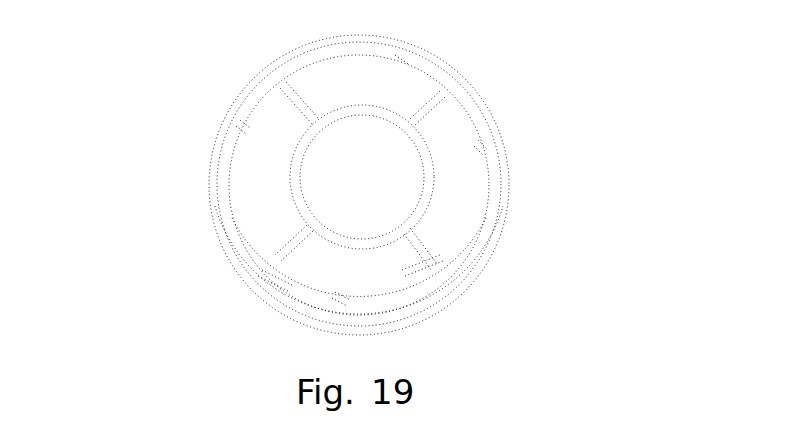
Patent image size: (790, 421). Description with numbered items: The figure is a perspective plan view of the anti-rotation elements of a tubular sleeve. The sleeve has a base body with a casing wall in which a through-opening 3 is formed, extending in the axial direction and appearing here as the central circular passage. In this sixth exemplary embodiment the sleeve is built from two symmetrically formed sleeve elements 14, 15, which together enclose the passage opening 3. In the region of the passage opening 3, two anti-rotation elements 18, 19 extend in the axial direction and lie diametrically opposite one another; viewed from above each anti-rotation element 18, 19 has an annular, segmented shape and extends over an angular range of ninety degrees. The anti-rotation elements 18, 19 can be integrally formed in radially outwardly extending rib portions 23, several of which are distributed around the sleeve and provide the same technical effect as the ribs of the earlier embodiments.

The through-opening 3 is at (318, 187).
The sleeve element 14 is at (477, 185).
The sleeve element 15 is at (420, 87).
The anti-rotation element 18 is at (340, 78).
The anti-rotation element 19 is at (457, 222).
The rib portion 23 is at (392, 56).